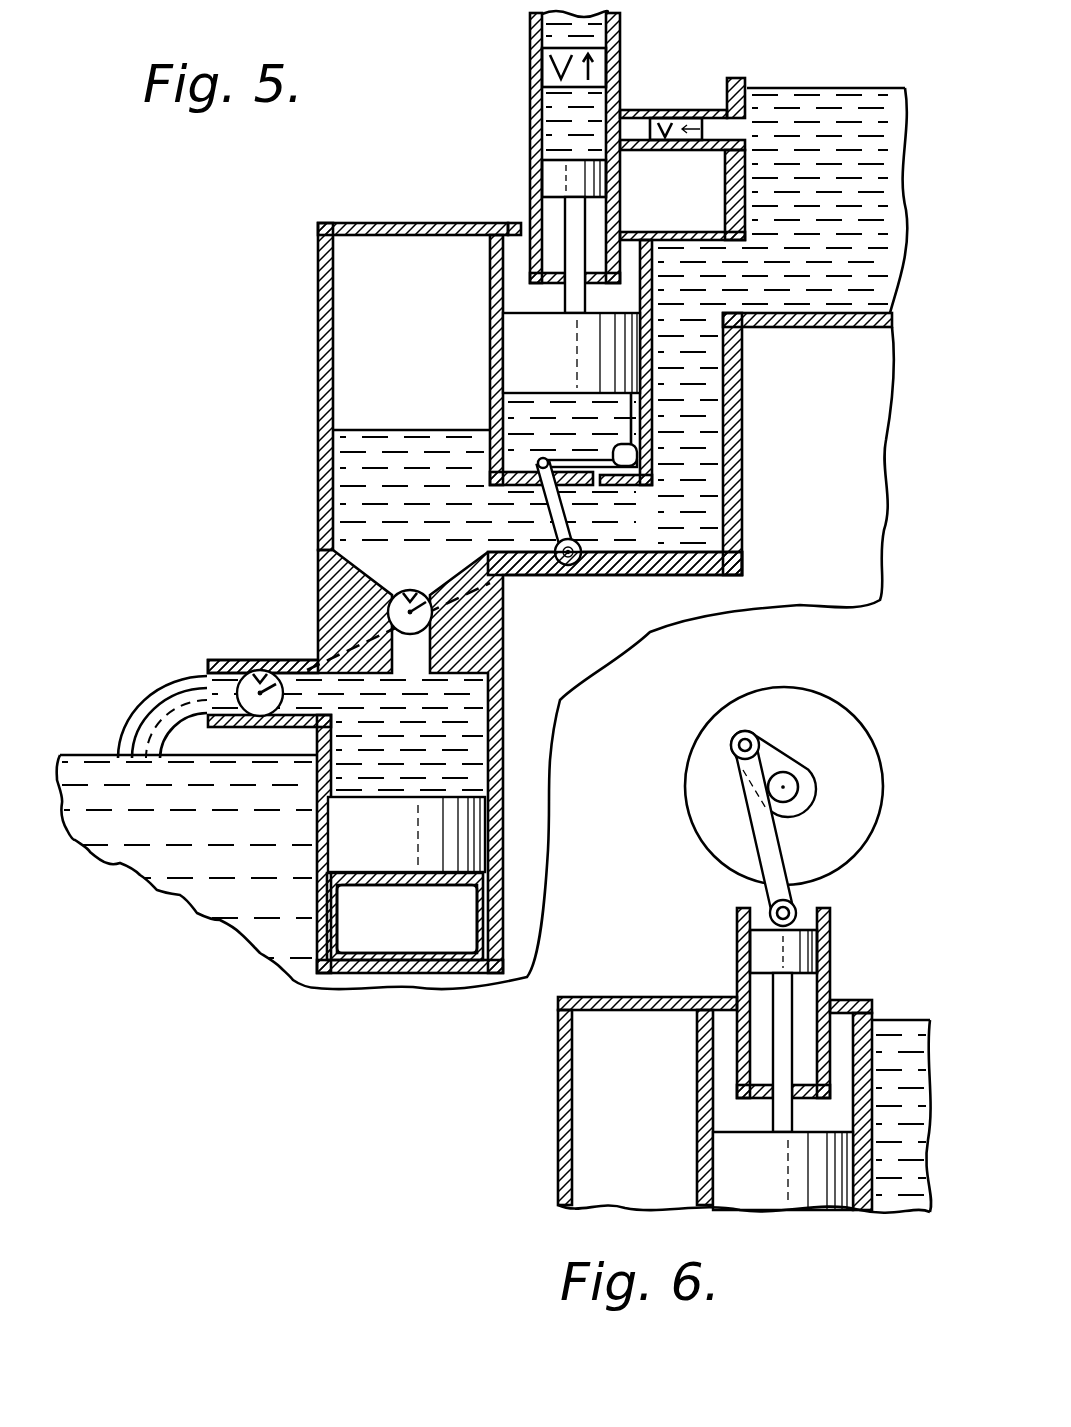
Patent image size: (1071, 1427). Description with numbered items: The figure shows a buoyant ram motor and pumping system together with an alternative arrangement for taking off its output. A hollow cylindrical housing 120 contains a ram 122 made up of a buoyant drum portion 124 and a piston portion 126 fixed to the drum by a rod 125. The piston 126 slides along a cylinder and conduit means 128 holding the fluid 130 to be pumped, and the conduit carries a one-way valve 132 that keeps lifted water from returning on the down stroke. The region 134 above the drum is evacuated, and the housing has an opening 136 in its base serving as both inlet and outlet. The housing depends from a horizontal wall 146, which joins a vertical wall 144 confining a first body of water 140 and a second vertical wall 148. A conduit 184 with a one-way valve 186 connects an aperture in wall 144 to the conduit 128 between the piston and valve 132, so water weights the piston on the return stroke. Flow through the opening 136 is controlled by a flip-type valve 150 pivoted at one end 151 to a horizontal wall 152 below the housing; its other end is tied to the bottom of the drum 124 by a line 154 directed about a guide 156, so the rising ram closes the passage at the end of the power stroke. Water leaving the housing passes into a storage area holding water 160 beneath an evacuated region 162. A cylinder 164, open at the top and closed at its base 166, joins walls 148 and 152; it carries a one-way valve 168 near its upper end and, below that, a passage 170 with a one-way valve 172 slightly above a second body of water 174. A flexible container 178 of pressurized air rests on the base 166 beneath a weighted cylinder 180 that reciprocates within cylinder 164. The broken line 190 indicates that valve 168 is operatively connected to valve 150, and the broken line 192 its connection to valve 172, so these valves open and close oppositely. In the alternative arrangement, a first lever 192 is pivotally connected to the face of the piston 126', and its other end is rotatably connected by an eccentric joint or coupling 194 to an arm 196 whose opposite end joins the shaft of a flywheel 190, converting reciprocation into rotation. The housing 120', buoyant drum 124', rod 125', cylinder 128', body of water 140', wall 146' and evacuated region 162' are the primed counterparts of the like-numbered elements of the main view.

In FIG. 5, the housing 120 is at (773, 411).
In FIG. 5, the ram 122 is at (538, 303).
In FIG. 5, the buoyant drum portion 124 is at (529, 353).
In FIG. 5, the rod 125 is at (619, 243).
In FIG. 5, the piston portion 126 is at (530, 178).
In FIG. 5, the cylinder and conduit means 128 is at (532, 148).
In FIG. 5, the fluid 130 is at (558, 28).
In FIG. 5, the one-way valve 132 is at (543, 72).
In FIG. 5, the region 134 is at (518, 230).
In FIG. 5, the opening 136 is at (597, 492).
In FIG. 5, the first body of water 140 is at (826, 136).
In FIG. 5, the vertical wall 144 is at (735, 78).
In FIG. 5, the horizontal wall 146 is at (531, 190).
In FIG. 5, the second vertical wall 148 is at (322, 378).
In FIG. 5, the valve 150 is at (548, 502).
In FIG. 5, the pivot end 151 is at (578, 562).
In FIG. 5, the horizontal wall 152 is at (735, 575).
In FIG. 5, the line 154 is at (572, 458).
In FIG. 5, the guide 156 is at (620, 446).
In FIG. 5, the water 160 is at (418, 432).
In FIG. 5, the region 162 is at (434, 387).
In FIG. 5, the cylindrical housing 164 is at (500, 745).
In FIG. 5, the base 166 is at (407, 967).
In FIG. 5, the one-way valve 168 is at (395, 600).
In FIG. 5, the passage 170 is at (298, 725).
In FIG. 5, the one-way valve 172 is at (240, 690).
In FIG. 5, the second body of water 174 is at (90, 752).
In FIG. 5, the container 178 is at (482, 935).
In FIG. 5, the weighted element 180 is at (450, 855).
In FIG. 5, the conduit 184 is at (640, 106).
In FIG. 5, the one-way valve 186 is at (680, 117).
In FIG. 5, the flywheel 190 is at (434, 606).
In FIG. 6, the flywheel 190 is at (880, 757).
In FIG. 5, the first arm or lever 192 is at (335, 655).
In FIG. 6, the first arm or lever 192 is at (775, 852).
In FIG. 6, the joint or coupling 194 is at (733, 735).
In FIG. 6, the arm or lever 196 is at (790, 762).
In FIG. 6, the housing body 120' is at (891, 1111).
In FIG. 6, the piston 124' is at (794, 1186).
In FIG. 6, the piston rod 125' is at (851, 1044).
In FIG. 6, the piston 126' is at (741, 951).
In FIG. 6, the pump cylinder 128' is at (836, 1001).
In FIG. 6, the water body 140' is at (906, 1088).
In FIG. 6, the air chamber 146' is at (715, 983).
In FIG. 6, the chamber 162' is at (599, 1107).